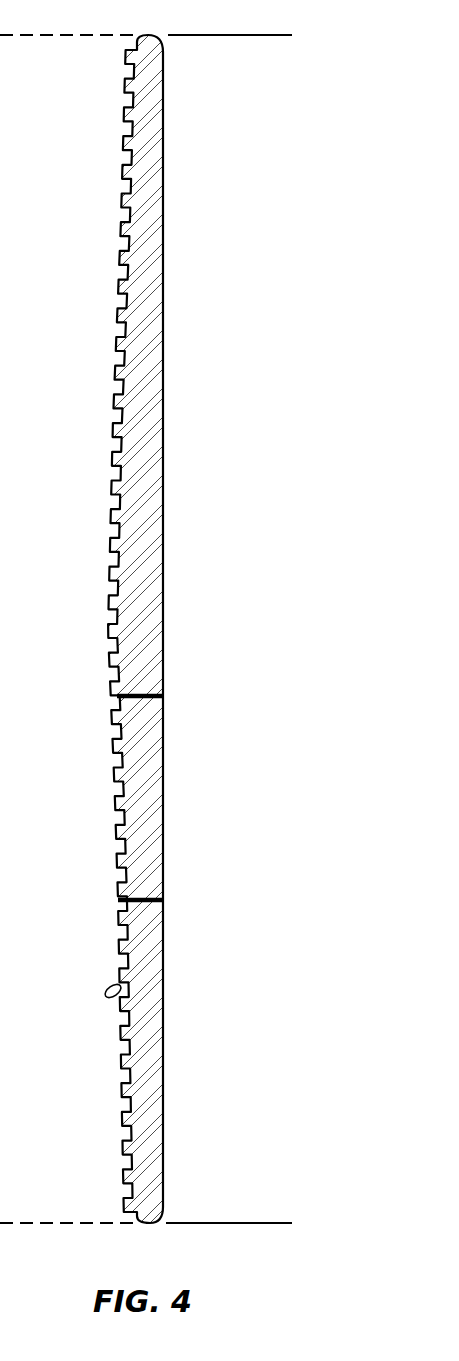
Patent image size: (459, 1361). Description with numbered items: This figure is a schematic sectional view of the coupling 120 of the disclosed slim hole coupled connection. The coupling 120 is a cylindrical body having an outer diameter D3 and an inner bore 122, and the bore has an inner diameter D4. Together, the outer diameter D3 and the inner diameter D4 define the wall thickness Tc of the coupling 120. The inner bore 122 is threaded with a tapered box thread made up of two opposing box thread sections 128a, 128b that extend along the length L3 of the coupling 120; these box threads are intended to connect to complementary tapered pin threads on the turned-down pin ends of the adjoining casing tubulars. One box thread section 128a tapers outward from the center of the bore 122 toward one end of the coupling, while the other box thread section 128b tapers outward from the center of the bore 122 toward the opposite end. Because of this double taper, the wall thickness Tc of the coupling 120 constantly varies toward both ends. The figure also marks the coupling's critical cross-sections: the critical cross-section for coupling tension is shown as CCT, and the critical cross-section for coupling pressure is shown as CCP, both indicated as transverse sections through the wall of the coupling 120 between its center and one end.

The coupling 120 is at (163, 518).
The inner bore 122 is at (108, 995).
The box thread section 128a is at (113, 414).
The box thread section 128b is at (115, 798).
The outer diameter D3 is at (163, 225).
The inner diameter D4 is at (117, 629).
The length L3 is at (270, 35).
The wall thickness Tc is at (125, 629).
The critical cross-section for coupling tension CCT is at (170, 702).
The critical cross-section for coupling pressure CCP is at (170, 906).